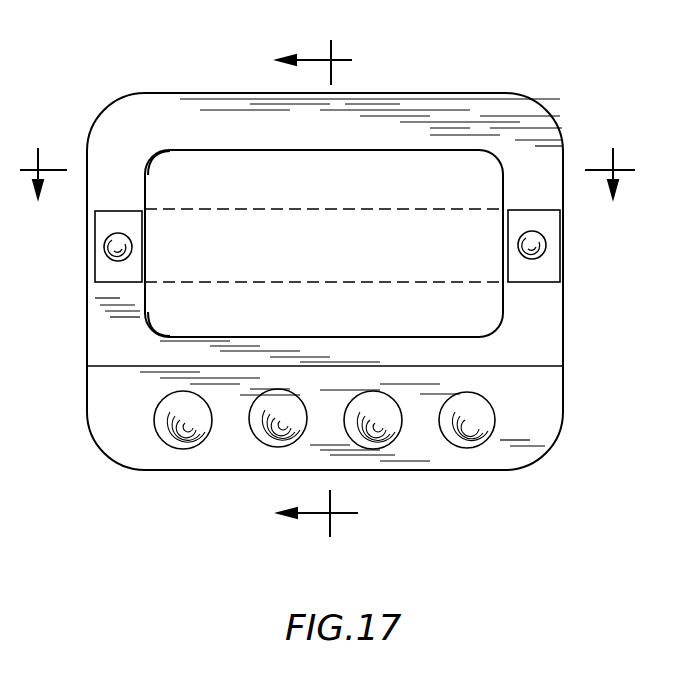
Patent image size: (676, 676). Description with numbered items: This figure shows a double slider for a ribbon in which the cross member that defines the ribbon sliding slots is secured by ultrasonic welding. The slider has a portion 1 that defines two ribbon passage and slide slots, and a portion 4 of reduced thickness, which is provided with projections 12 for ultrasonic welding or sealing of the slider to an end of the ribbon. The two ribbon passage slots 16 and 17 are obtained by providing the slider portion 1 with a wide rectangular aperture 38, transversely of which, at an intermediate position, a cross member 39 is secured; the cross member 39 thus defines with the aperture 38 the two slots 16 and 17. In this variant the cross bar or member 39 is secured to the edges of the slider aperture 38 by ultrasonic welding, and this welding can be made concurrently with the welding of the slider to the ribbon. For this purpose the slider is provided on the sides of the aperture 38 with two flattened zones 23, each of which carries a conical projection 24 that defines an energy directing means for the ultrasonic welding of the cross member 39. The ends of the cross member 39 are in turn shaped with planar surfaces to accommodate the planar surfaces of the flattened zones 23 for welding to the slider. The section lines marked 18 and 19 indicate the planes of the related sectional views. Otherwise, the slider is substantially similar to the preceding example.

The slider portion 1 is at (541, 123).
The slider portion of reduced thickness 4 is at (553, 413).
The projections 12 is at (262, 425).
The ribbon passage slot 16 is at (161, 157).
The ribbon passage slot 17 is at (162, 322).
The section line 18 is at (327, 160).
The section line 19 is at (317, 287).
The flattened zones 23 is at (103, 219).
The conical projection 24 is at (107, 252).
The rectangular aperture 38 is at (221, 170).
The cross member 39 is at (399, 219).